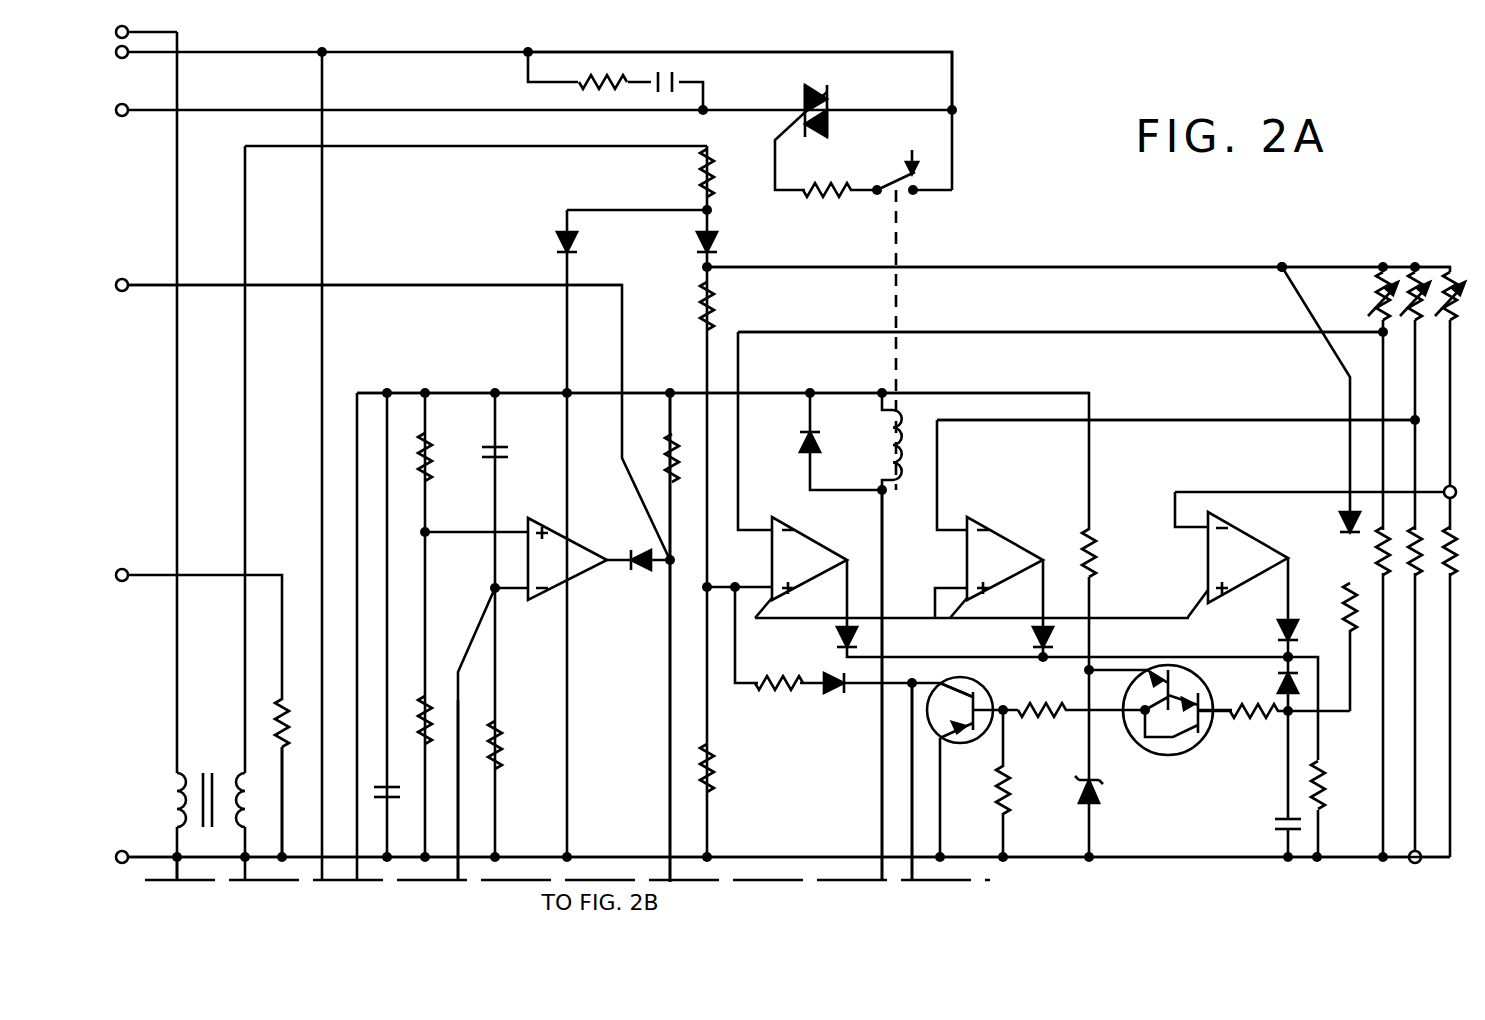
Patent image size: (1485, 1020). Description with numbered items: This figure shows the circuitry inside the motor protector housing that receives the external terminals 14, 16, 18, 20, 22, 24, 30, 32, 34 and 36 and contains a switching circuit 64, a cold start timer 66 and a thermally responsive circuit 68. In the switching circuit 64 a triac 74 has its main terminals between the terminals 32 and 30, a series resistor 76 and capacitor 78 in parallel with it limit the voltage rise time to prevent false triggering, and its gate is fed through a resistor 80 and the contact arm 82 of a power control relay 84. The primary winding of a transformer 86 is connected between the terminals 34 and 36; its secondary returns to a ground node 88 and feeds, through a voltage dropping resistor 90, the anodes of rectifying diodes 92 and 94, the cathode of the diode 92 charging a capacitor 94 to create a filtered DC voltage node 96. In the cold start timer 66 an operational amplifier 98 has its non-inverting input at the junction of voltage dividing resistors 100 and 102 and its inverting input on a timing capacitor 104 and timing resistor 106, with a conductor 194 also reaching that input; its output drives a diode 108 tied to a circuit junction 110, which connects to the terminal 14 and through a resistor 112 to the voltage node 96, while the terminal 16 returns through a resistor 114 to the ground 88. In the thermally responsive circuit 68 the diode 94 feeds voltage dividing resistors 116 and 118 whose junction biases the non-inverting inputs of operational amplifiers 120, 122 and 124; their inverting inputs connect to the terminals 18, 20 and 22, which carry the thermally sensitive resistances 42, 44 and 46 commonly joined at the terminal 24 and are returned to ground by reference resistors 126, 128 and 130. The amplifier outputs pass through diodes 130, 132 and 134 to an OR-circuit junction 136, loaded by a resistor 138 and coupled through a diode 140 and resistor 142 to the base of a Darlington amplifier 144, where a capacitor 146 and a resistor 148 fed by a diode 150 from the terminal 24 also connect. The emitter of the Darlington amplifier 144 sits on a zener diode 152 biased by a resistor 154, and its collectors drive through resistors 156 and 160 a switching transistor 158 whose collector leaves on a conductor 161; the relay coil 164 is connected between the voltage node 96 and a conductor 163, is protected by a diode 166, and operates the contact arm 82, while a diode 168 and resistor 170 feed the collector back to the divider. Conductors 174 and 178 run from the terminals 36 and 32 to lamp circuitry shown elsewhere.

The external terminal 14 is at (127, 280).
The external terminal 16 is at (126, 570).
The external terminal 18 is at (1380, 335).
The external terminal 20 is at (1413, 418).
The external terminal 22 is at (1445, 487).
The external terminal 24 is at (1285, 262).
The external terminal 30 is at (125, 116).
The external terminal 32 is at (122, 58).
The external terminal 34 is at (127, 37).
The external terminal 36 is at (126, 852).
The thermally sensitive resistance 42 is at (1375, 300).
The thermally sensitive resistance 44 is at (1410, 278).
The thermally sensitive resistance 46 is at (1450, 275).
The switching circuit 64 is at (980, 111).
The cold start timer 66 is at (500, 270).
The thermally responsive circuit 68 is at (1160, 265).
The triac 74 is at (830, 88).
The resistor 76 is at (588, 82).
The capacitor 78 is at (676, 70).
The resistor 80 is at (822, 177).
The contact arm 82 is at (885, 195).
The power control relay 84 is at (912, 149).
The transformer 86 is at (228, 778).
The ground node 88 is at (710, 852).
The voltage dropping resistor 90 is at (712, 160).
The rectifying diode 92 is at (580, 242).
The rectifying diode and capacitor 94 is at (373, 788).
The DC voltage node 96 is at (562, 388).
The operational amplifier 98 is at (575, 573).
The voltage dividing resistor 100 is at (432, 445).
The voltage dividing resistor 102 is at (428, 705).
The timing capacitor 104 is at (508, 452).
The timing resistor 106 is at (500, 745).
The diode 108 is at (640, 550).
The circuit junction 110 is at (675, 555).
The resistor 112 is at (667, 448).
The resistor 114 is at (275, 715).
The voltage dividing resistor 116 is at (714, 302).
The voltage dividing resistor 118 is at (712, 760).
The operational amplifier 120 is at (772, 560).
The operational amplifier 122 is at (967, 560).
The operational amplifier 124 is at (1208, 558).
The reference resistor 126 is at (1375, 560).
The reference resistor 128 is at (1410, 535).
The reference resistor and diode 130 is at (836, 640).
The diode 132 is at (1030, 640).
The diode 134 is at (1278, 628).
The OR-circuit junction 136 is at (1293, 652).
The resistor 138 is at (1325, 770).
The diode 140 is at (1276, 680).
The resistor 142 is at (1250, 720).
The Darlington amplifier 144 is at (1195, 752).
The capacitor 146 is at (1275, 822).
The resistor 148 is at (1343, 592).
The diode 150 is at (1338, 518).
The zener diode 152 is at (1100, 778).
The resistor 154 is at (1095, 540).
The resistor 156 is at (1040, 720).
The switching transistor 158 is at (985, 688).
The resistor 160 is at (1010, 780).
The conductor 161 is at (914, 880).
The conductor 163 is at (880, 880).
The relay coil 164 is at (885, 462).
The diode 166 is at (800, 460).
The diode 168 is at (838, 695).
The resistor 170 is at (782, 693).
The conductor 174 is at (180, 870).
The conductor 178 is at (285, 846).
The conductor 194 is at (455, 880).